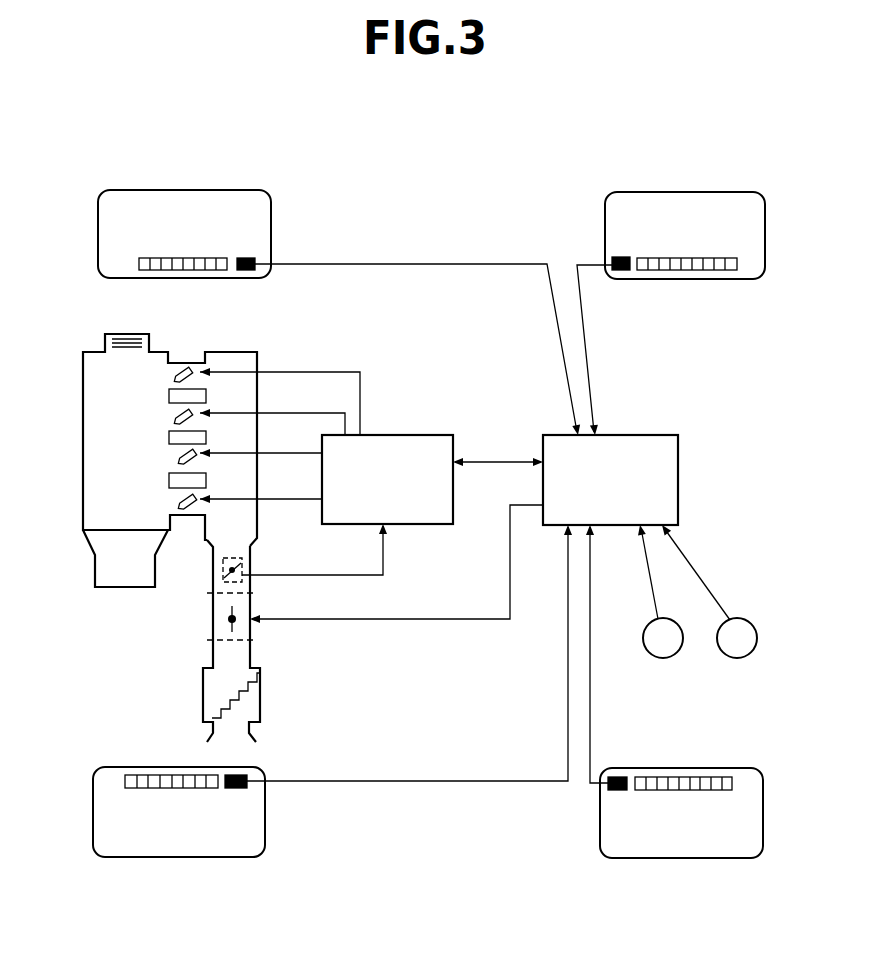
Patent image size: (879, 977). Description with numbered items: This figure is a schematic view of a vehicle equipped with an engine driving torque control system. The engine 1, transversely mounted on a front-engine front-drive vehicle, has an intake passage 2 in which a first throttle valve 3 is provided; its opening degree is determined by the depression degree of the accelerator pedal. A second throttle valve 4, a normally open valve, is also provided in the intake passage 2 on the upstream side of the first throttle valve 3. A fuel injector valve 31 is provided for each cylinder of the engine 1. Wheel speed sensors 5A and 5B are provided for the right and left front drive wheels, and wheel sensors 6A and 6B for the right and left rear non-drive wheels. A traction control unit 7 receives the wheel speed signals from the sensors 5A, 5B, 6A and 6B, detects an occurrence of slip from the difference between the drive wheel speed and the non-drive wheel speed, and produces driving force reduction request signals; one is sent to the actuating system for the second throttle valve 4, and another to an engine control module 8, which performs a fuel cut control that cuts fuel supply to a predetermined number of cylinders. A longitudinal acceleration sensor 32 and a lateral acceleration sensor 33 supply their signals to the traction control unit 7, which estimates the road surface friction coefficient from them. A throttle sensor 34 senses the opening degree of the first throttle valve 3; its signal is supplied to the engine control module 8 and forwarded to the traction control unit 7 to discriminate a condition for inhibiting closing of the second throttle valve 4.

The engine 1 is at (76, 416).
The intake passage 2 is at (260, 458).
The first throttle valve 3 is at (246, 558).
The second throttle valve 4 is at (252, 626).
The wheel speed sensor 5A is at (244, 256).
The wheel speed sensor 5B is at (231, 791).
The wheel sensor 6A is at (630, 256).
The wheel sensor 6B is at (614, 792).
The traction control unit 7 is at (678, 478).
The engine control module 8 is at (380, 434).
The fuel injector valve 31 is at (182, 505).
The longitudinal acceleration (G) sensor 32 is at (663, 658).
The lateral acceleration (G) sensor 33 is at (737, 658).
The throttle sensor 34 is at (222, 579).